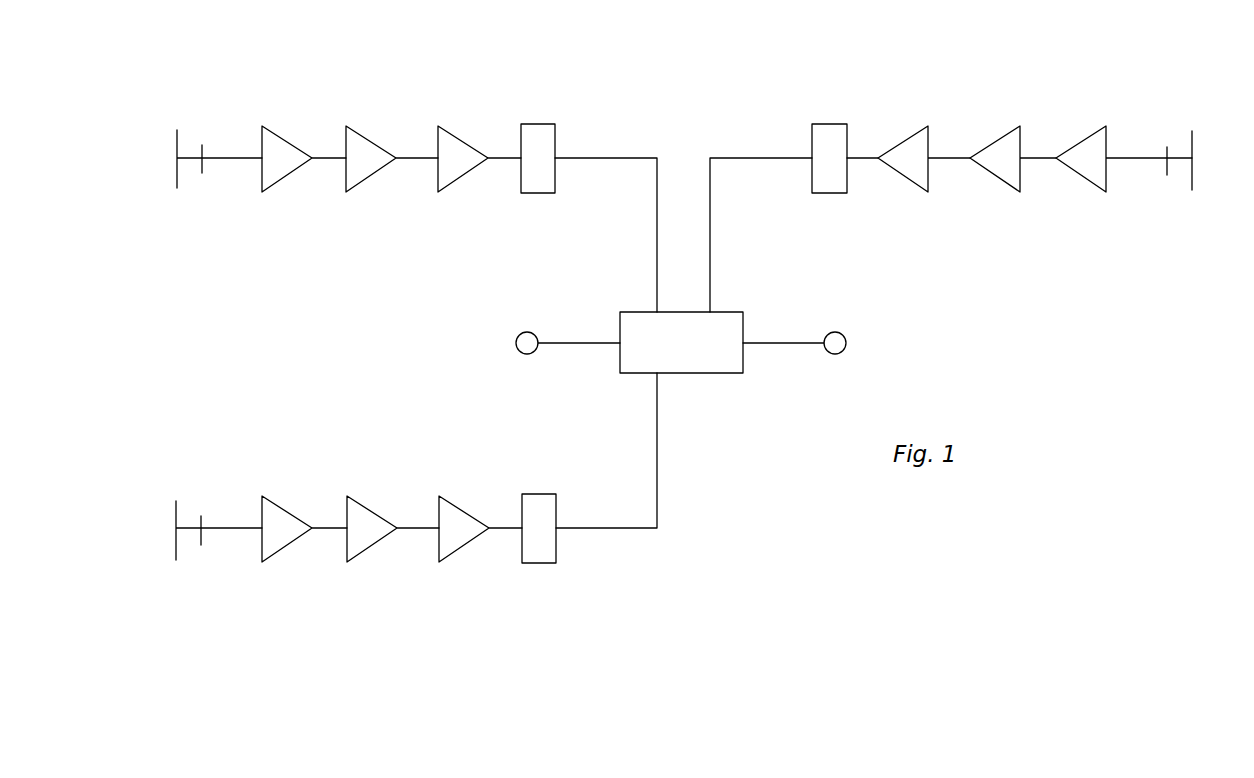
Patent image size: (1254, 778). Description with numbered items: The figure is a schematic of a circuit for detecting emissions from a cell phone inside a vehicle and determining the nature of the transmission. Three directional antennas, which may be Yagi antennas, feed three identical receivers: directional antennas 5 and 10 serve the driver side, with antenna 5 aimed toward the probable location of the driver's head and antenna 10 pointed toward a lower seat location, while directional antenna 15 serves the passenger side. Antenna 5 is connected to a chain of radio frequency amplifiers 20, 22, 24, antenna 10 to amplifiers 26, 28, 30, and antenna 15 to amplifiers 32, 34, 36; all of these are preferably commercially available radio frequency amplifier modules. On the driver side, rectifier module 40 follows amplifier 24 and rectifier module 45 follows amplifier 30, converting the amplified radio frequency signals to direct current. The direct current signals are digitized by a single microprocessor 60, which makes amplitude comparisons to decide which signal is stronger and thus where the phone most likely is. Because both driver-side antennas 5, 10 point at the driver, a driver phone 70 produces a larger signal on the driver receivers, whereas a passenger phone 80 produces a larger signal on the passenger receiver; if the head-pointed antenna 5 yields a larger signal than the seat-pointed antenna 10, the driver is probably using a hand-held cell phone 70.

The directional antenna 5 is at (188, 137).
The directional antenna 10 is at (181, 498).
The directional antenna 15 is at (1180, 137).
The amplifier 20 is at (272, 130).
The amplifier 22 is at (358, 131).
The amplifier 24 is at (442, 127).
The amplifier 26 is at (272, 500).
The amplifier 28 is at (358, 500).
The amplifier 30 is at (830, 122).
The amplifier 32 is at (925, 122).
The amplifier 34 is at (1018, 122).
The amplifier 36 is at (1103, 122).
The rectifier module 40 is at (538, 123).
The rectifier module 45 is at (538, 494).
The microprocessor 60 is at (645, 312).
The driver phone 70 is at (527, 331).
The passenger phone 80 is at (835, 331).